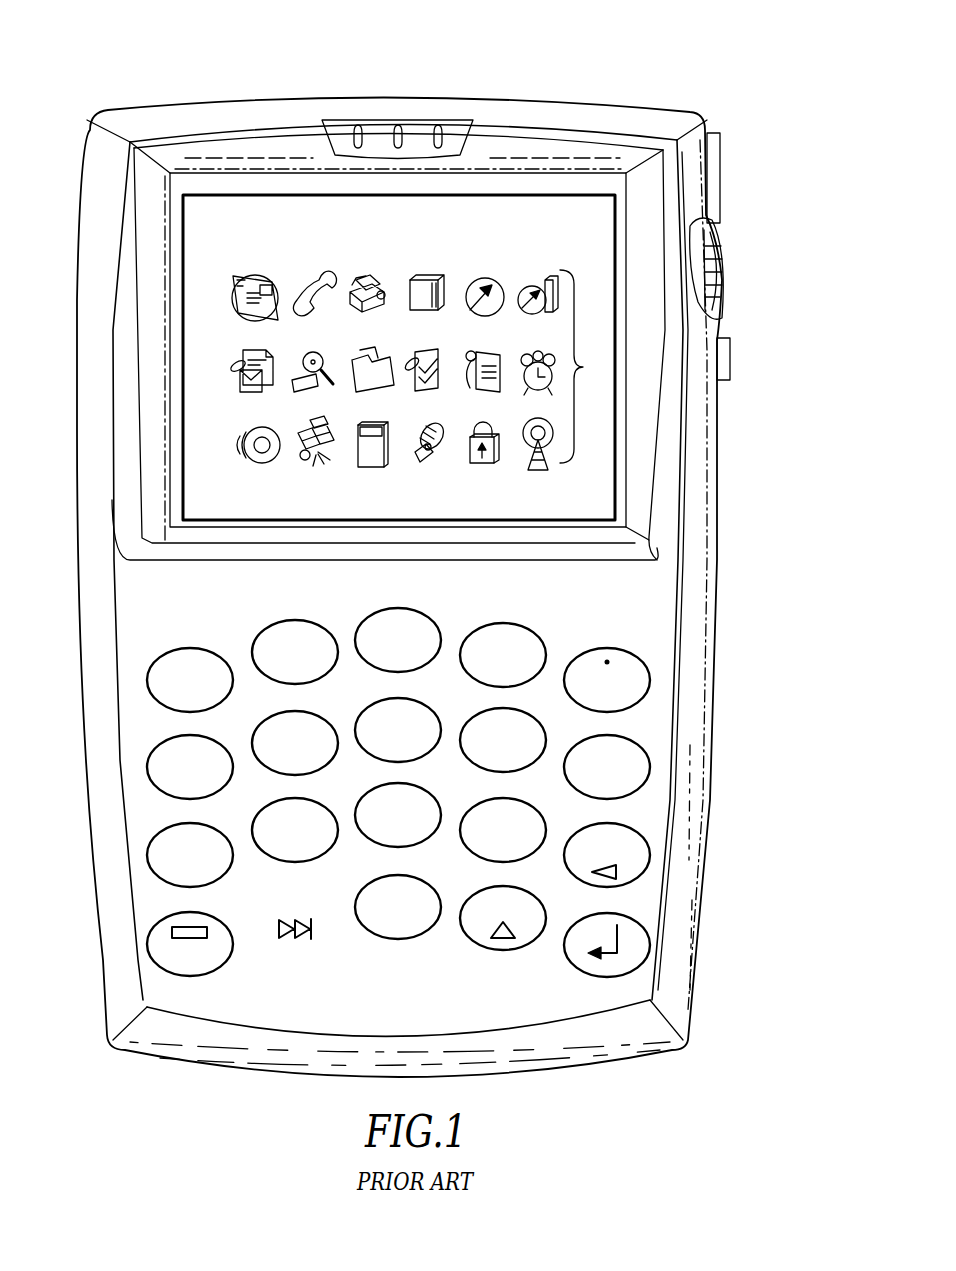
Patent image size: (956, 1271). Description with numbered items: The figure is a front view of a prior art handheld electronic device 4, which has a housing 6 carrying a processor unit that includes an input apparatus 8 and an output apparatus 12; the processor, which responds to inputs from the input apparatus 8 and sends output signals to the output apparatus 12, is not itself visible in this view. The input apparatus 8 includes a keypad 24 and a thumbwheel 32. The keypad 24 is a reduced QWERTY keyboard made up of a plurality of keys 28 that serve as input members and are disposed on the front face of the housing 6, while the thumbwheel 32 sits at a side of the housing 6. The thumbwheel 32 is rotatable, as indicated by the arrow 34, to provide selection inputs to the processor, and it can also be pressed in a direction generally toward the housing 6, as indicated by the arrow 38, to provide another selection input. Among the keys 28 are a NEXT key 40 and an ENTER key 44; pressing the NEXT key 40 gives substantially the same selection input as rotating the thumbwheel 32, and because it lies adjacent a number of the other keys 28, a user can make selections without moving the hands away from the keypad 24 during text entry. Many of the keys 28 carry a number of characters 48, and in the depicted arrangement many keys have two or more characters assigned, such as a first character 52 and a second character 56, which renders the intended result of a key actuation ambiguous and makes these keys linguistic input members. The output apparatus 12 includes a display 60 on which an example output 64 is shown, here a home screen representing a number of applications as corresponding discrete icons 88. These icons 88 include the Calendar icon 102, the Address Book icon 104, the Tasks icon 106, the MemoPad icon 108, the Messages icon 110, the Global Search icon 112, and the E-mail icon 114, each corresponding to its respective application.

The handheld electronic device 4 is at (208, 85).
The housing 6 is at (600, 104).
The input apparatus 8 is at (670, 617).
The output apparatus 12 is at (480, 142).
The keypad 24 is at (672, 735).
The keys 28 is at (358, 791).
The thumbwheel 32 is at (703, 262).
The arrow 34 is at (789, 306).
The arrow 38 is at (785, 272).
The NEXT key 40 is at (322, 950).
The ENTER key 44 is at (620, 975).
The characters 48 is at (397, 760).
The first character 52 is at (360, 691).
The second character 56 is at (439, 697).
The display 60 is at (600, 237).
The output 64 is at (458, 281).
The icons 88 is at (423, 370).
The Calendar icon 102 is at (406, 278).
The Address Book icon 104 is at (360, 277).
The Tasks icon 106 is at (428, 355).
The MemoPad icon 108 is at (452, 378).
The Messages icon 110 is at (247, 350).
The Global Search icon 112 is at (318, 358).
The E-mail icon 114 is at (266, 277).